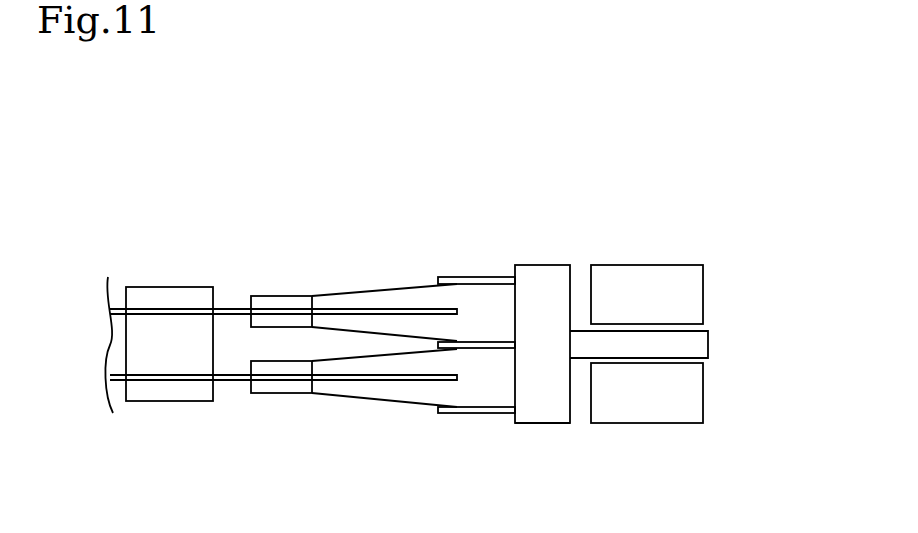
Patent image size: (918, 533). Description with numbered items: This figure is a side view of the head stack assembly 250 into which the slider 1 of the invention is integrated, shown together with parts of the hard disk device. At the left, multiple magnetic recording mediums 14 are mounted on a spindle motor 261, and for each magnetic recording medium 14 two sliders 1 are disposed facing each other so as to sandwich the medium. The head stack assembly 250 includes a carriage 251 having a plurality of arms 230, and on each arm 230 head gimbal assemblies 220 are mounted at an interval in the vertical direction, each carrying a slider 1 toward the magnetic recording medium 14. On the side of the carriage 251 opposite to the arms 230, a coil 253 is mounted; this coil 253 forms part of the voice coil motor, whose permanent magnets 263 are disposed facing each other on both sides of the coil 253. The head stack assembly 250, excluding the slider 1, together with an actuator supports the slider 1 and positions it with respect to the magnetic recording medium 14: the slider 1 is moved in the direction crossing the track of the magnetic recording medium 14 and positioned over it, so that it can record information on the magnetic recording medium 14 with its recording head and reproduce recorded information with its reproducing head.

The slider 1 is at (245, 304).
The magnetic recording medium 14 is at (226, 309).
The head gimbal assembly 220 is at (368, 290).
The arm 230 is at (453, 277).
The head stack assembly 250 is at (545, 239).
The carriage 251 is at (547, 415).
The coil 253 is at (697, 347).
The spindle motor 261 is at (150, 293).
The permanent magnet 263 is at (643, 263).